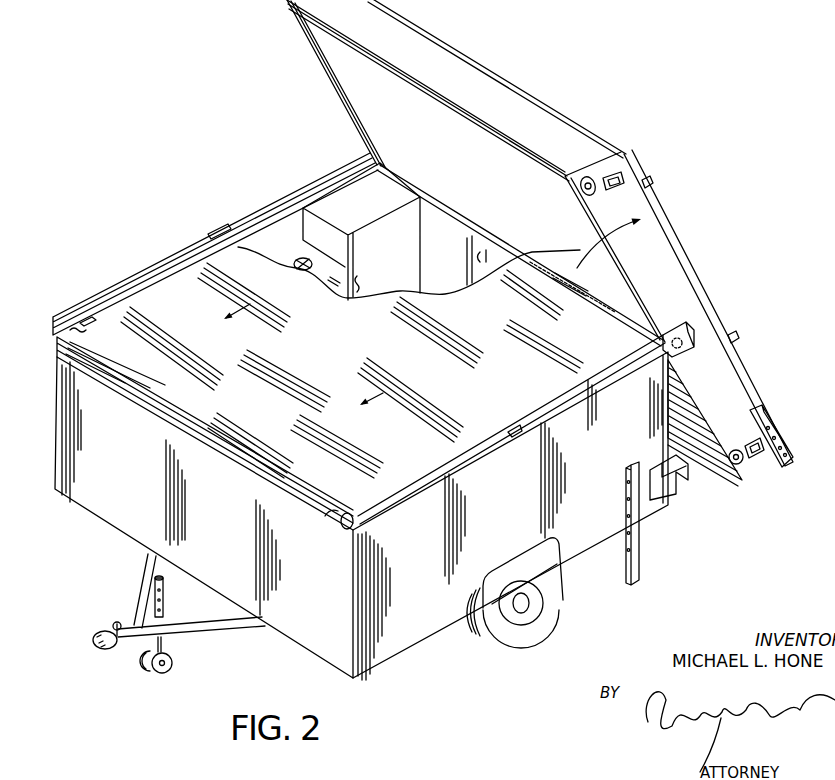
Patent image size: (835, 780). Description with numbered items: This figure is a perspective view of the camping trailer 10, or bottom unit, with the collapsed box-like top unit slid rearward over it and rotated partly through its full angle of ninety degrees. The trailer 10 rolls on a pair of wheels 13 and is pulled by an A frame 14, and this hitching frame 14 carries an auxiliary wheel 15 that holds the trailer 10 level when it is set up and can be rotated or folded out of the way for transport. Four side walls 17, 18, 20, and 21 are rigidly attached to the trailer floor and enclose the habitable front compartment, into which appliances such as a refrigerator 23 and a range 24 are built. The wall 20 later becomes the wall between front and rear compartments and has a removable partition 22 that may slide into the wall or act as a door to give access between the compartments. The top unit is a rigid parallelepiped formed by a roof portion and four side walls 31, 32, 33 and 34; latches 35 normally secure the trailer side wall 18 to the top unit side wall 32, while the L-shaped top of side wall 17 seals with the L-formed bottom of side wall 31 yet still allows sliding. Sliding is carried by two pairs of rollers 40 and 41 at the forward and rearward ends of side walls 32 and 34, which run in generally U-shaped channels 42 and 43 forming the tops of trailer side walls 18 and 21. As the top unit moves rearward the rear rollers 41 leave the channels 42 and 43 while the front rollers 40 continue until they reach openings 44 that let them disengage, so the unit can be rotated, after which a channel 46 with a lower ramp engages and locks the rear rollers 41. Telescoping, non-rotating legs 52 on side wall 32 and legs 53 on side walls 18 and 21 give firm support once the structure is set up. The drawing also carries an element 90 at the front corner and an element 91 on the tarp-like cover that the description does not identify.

The trailer 10 is at (95, 540).
The wheels 13 is at (548, 604).
The A frame 14 is at (143, 588).
The auxiliary wheel 15 is at (172, 662).
The side wall 17 is at (80, 421).
The side wall 18 is at (398, 640).
The side wall 20 is at (447, 220).
The side wall 21 is at (160, 282).
The removable partition 22 is at (500, 252).
The refrigerator 23 is at (353, 200).
The range 24 is at (298, 257).
The side wall 31 is at (490, 80).
The side wall 32 is at (648, 240).
The side wall 33 is at (716, 458).
The side wall 34 is at (322, 68).
The latches 35 is at (616, 176).
The rollers 40 is at (588, 176).
The rollers 41 is at (742, 467).
The U-shaped channel 42 is at (443, 463).
The U-shaped channel 43 is at (236, 222).
The openings 44 is at (508, 427).
The channel 46 is at (659, 469).
The telescoping legs 52 is at (770, 430).
The telescoping legs 53 is at (638, 565).
The roller 90 is at (320, 514).
The cover 91 is at (358, 380).